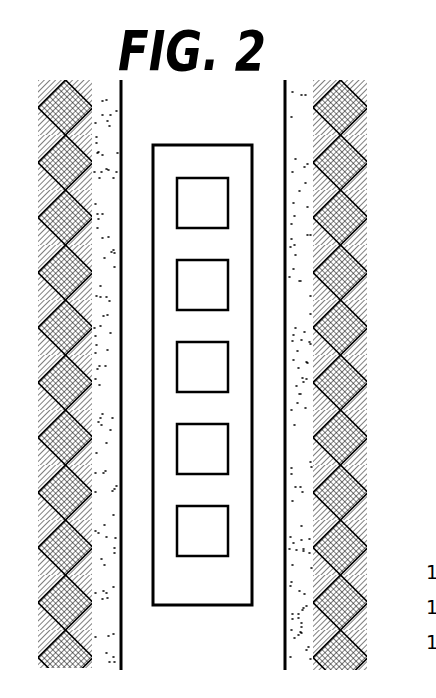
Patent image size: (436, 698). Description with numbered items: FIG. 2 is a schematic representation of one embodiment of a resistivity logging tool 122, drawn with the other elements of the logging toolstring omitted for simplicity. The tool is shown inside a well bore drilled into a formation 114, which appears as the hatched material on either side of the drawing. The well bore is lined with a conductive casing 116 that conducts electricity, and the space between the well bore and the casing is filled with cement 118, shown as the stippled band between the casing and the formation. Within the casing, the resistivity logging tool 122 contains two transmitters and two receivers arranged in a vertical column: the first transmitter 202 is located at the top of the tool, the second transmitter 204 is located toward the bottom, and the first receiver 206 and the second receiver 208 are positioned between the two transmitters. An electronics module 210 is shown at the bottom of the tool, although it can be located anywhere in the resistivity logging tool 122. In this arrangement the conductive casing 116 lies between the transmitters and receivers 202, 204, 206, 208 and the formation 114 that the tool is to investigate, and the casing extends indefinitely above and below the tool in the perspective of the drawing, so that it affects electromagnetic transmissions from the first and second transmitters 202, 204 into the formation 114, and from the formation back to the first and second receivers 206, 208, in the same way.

The formation 114 is at (330, 213).
The conductive casing 116 is at (286, 137).
The cement 118 is at (306, 177).
The resistivity logging tool 122 is at (206, 145).
The transmitter T1 202 is at (212, 229).
The transmitter T2 204 is at (212, 475).
The receiver R1 206 is at (212, 311).
The receiver R2 208 is at (212, 393).
The electronics module EL 210 is at (212, 557).